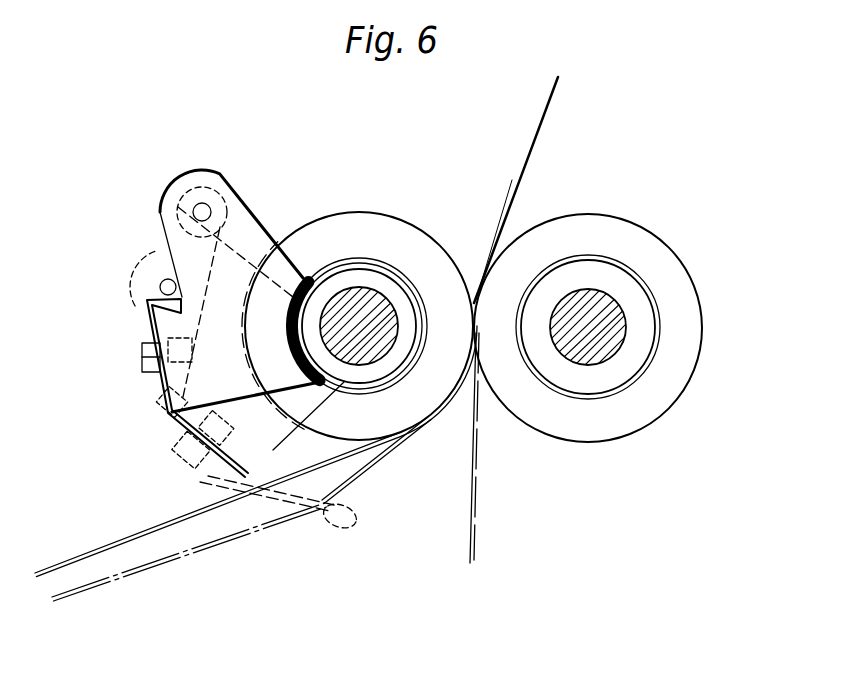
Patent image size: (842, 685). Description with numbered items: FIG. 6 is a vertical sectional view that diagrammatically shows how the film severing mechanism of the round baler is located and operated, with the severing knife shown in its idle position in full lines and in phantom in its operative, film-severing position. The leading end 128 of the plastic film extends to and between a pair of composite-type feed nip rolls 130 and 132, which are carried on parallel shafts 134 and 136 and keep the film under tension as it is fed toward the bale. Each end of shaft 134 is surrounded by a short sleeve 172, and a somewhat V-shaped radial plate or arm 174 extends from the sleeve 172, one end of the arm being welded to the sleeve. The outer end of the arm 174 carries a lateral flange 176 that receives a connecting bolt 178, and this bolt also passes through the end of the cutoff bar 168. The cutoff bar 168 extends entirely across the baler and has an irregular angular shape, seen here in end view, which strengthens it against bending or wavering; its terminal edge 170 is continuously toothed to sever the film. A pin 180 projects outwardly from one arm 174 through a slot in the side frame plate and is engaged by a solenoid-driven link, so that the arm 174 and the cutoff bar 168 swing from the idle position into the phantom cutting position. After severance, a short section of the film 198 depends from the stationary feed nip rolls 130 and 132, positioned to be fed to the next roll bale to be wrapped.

The leading end of the film 128 is at (541, 120).
The feed nip roll 130 is at (350, 211).
The feed nip roll 132 is at (605, 212).
The shaft 134 is at (383, 360).
The shaft 136 is at (592, 366).
The cutoff bar 168 is at (158, 384).
The terminal edge 170 is at (254, 478).
The sleeve 172 is at (392, 272).
The radial plate or arm 174 is at (252, 214).
The lateral flange 176 is at (145, 322).
The connecting bolt 178 is at (142, 356).
The pin 180 is at (194, 206).
The short section of the film 198 is at (477, 468).